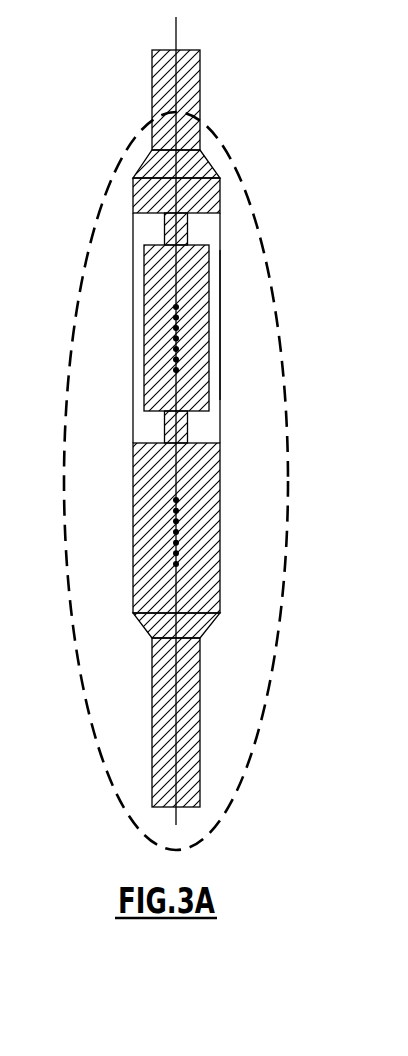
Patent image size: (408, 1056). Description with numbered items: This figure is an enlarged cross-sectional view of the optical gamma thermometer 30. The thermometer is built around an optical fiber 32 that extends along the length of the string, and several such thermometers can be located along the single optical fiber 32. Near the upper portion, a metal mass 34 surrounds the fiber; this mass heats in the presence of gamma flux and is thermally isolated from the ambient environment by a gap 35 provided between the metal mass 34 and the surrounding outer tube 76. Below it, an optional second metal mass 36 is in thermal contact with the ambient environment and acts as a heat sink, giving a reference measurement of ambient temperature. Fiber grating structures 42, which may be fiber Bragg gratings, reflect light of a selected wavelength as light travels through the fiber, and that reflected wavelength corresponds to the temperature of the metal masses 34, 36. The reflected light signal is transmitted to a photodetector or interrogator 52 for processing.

The optical gamma thermometer 30 is at (122, 385).
The optical fiber 32 is at (177, 758).
The metal mass 34 is at (203, 292).
The gap 35 is at (220, 373).
The second metal mass 36 is at (208, 508).
The fiber grating structure 42 is at (162, 517).
The photodetector or interrogator 52 is at (170, 315).
The outer tube 76 is at (221, 318).